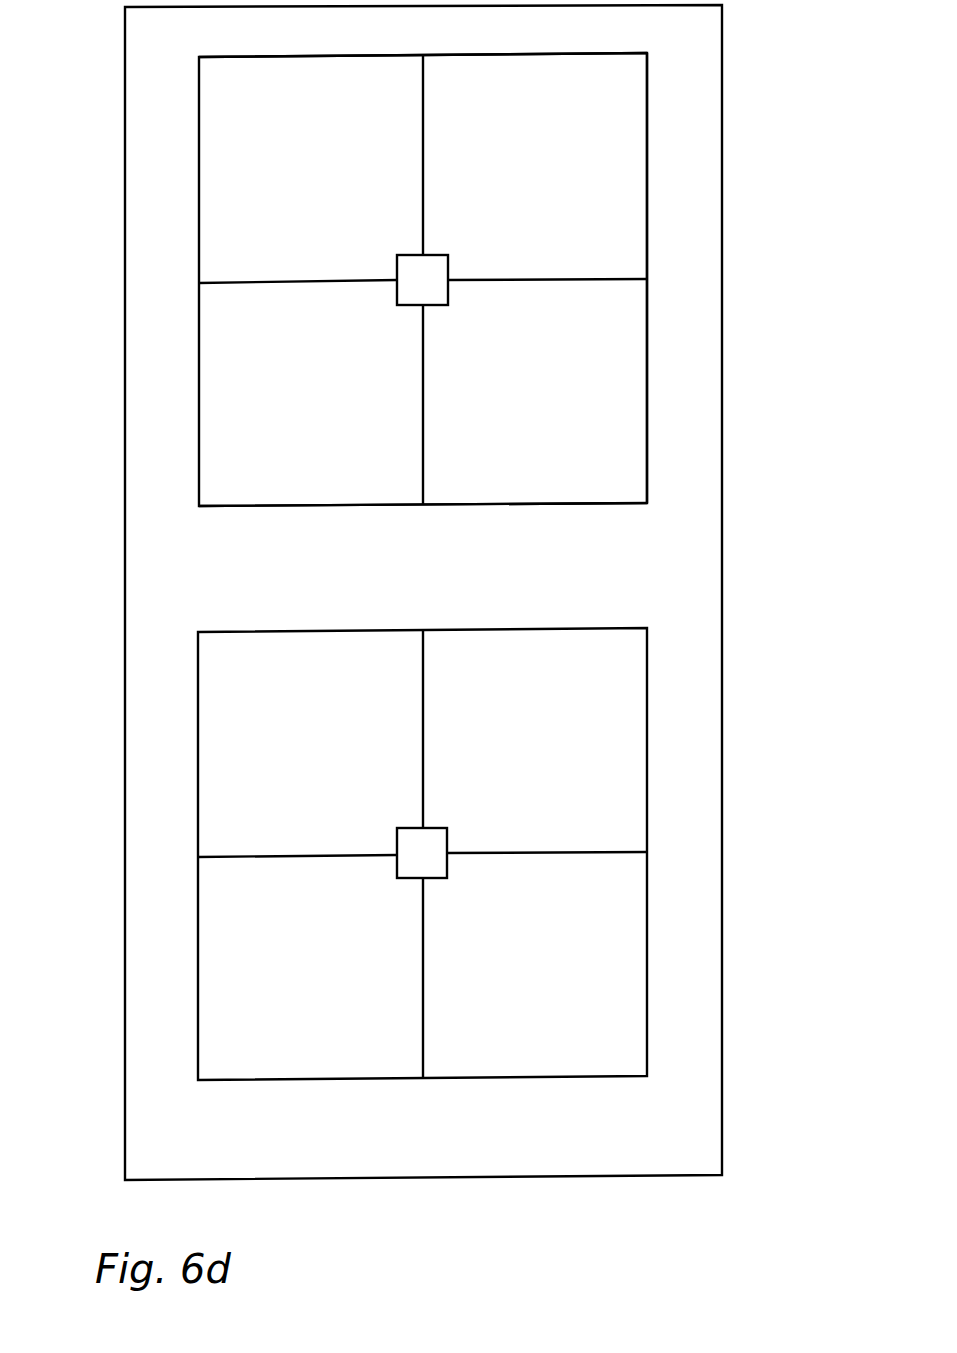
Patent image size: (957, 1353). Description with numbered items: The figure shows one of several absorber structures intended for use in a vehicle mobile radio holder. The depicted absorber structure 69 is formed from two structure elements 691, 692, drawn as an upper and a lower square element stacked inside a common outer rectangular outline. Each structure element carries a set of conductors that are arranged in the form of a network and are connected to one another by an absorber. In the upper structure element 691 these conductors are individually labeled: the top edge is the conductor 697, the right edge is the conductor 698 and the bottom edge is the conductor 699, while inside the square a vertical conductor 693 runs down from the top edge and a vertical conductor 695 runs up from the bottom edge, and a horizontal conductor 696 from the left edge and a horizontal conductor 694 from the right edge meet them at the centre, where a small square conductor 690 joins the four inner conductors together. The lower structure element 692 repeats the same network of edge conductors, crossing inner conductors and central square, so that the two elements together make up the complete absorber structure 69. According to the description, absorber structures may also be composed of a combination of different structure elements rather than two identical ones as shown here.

The absorber structure 69 is at (712, 556).
The conductor 690 is at (209, 367).
The structure element 691 is at (163, 281).
The structure element 692 is at (170, 821).
The conductor 693 is at (430, 163).
The conductor 694 is at (531, 285).
The conductor 695 is at (427, 398).
The conductor 696 is at (326, 285).
The conductor 697 is at (504, 54).
The conductor 698 is at (648, 263).
The conductor 699 is at (392, 508).